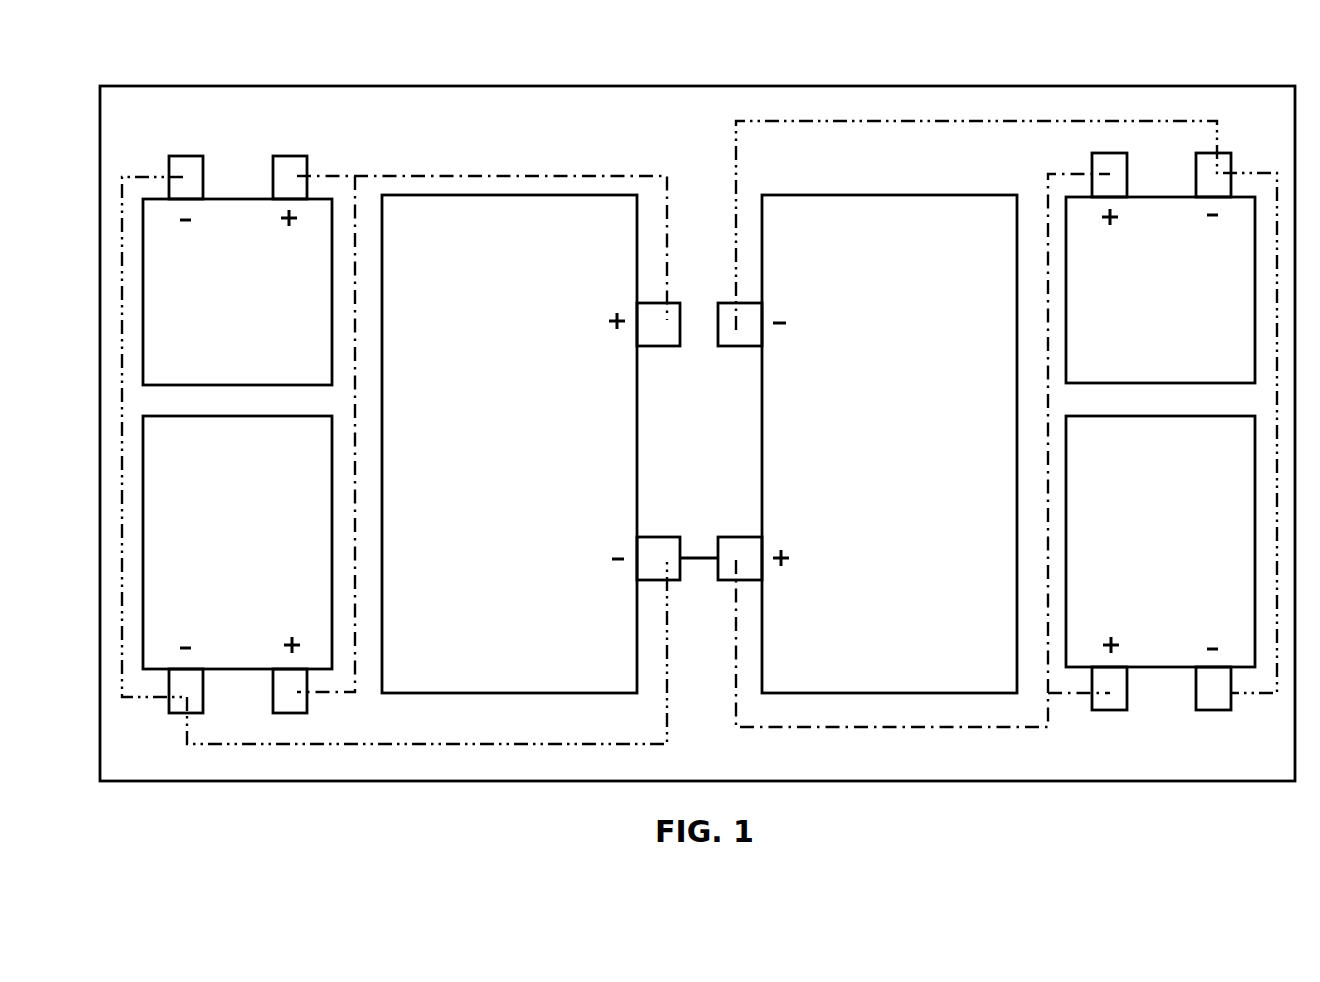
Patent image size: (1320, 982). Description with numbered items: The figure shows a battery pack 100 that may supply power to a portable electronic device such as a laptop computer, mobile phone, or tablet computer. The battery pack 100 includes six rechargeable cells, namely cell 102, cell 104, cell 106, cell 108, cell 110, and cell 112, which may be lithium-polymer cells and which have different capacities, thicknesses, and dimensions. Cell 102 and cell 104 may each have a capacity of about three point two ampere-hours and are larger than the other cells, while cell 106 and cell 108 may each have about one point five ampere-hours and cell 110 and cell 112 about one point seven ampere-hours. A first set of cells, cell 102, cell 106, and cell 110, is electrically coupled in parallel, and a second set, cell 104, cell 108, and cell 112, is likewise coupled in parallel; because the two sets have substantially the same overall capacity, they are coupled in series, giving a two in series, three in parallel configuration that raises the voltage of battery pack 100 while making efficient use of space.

The battery pack 100 is at (648, 85).
The cell 102 is at (531, 444).
The cell 104 is at (867, 444).
The cell 106 is at (237, 270).
The cell 108 is at (1160, 268).
The cell 110 is at (237, 564).
The cell 112 is at (1160, 563).